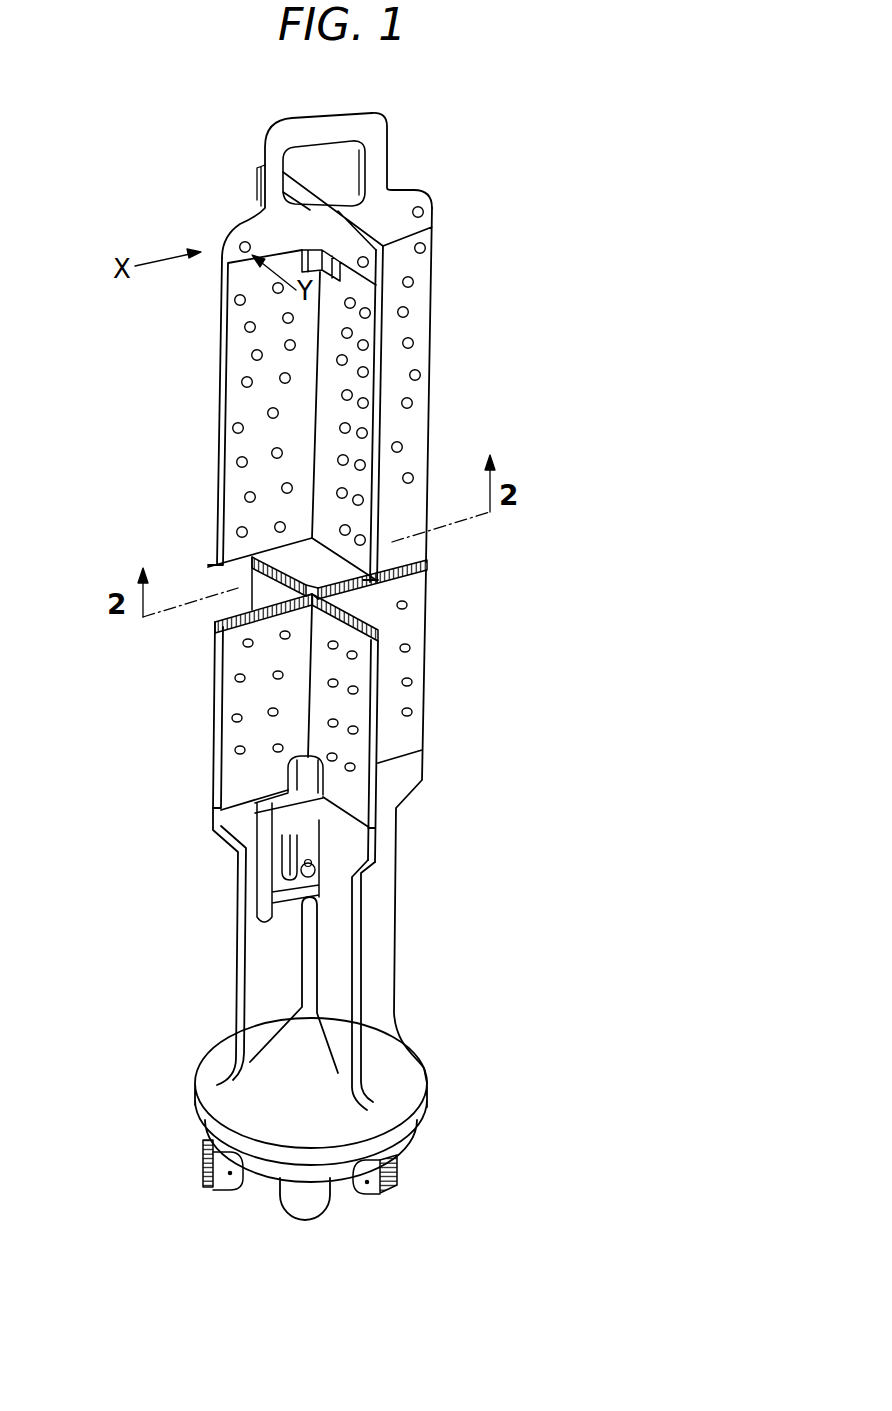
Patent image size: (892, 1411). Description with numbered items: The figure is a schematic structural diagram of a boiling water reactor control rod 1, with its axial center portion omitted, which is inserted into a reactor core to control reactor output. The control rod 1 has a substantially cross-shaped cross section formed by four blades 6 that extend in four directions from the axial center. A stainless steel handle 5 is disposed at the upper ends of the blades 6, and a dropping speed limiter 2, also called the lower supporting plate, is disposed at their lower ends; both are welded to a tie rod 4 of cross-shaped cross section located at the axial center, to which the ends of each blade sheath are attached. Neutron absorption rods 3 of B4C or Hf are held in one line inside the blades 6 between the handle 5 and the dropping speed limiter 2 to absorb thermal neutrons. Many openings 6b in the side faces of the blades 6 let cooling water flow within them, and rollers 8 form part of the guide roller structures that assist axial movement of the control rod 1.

The control rod 1 is at (573, 275).
The dropping speed limiter 2 is at (378, 923).
The neutron absorption rods 3 is at (443, 566).
The tie rod 4 is at (312, 587).
The handle 5 is at (388, 128).
The blades 6 is at (221, 410).
The openings 6b is at (244, 495).
The rollers 8 is at (224, 233).